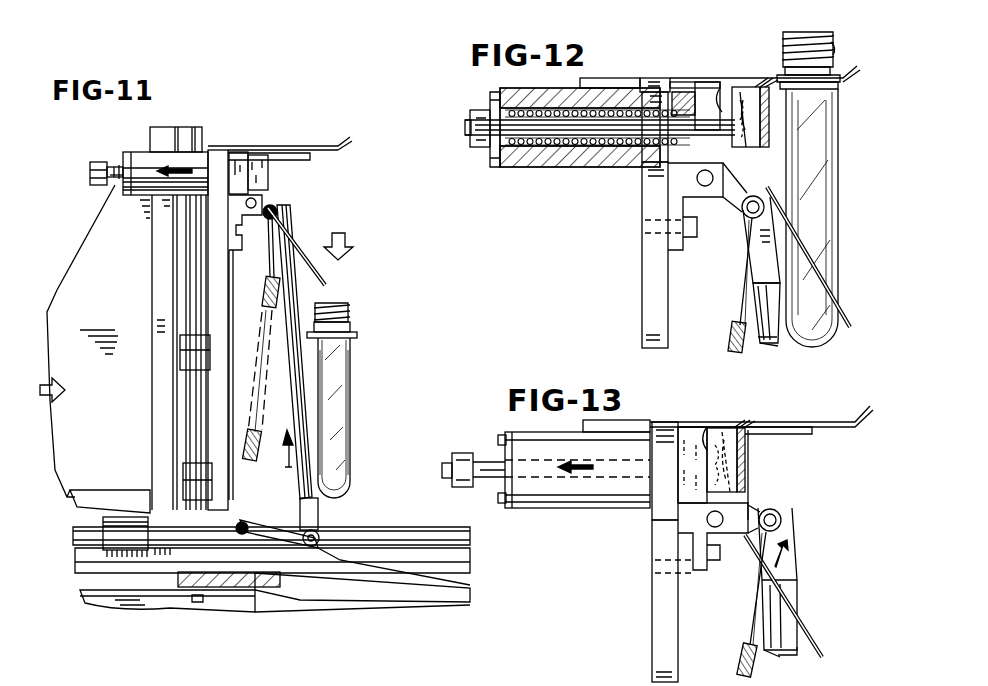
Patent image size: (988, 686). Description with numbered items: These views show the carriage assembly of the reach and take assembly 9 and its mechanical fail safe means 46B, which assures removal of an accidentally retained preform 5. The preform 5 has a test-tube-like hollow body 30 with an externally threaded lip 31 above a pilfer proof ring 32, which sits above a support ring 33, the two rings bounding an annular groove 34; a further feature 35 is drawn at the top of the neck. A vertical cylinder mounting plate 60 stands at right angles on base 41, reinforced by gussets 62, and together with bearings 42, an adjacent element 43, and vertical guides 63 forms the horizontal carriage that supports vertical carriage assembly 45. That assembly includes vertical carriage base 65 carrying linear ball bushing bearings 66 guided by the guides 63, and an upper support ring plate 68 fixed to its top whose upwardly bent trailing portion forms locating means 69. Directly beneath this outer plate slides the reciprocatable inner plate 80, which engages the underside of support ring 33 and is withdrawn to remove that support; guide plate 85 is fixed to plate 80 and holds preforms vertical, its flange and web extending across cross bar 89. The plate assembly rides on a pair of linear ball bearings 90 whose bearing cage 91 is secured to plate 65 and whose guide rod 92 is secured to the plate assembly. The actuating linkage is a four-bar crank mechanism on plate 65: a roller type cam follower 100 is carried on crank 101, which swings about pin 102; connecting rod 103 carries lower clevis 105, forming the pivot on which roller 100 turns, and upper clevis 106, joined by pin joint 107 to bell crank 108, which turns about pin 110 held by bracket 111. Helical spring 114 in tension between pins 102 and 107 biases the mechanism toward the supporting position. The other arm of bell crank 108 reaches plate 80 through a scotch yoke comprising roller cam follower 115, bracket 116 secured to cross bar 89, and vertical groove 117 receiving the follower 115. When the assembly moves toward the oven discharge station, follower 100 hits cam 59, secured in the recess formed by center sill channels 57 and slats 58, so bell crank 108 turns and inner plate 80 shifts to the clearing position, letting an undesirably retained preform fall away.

In FIG. 11, the preform 5 is at (354, 394).
In FIG. 12, the preform 5 is at (842, 158).
In FIG. 11, the reach and take assembly 9 is at (63, 275).
In FIG. 11, the hollow body 30 is at (352, 416).
In FIG. 12, the hollow body 30 is at (842, 208).
In FIG. 12, the externally threaded lip 31 is at (812, 40).
In FIG. 12, the pilfer proof ring 32 is at (836, 52).
In FIG. 11, the support ring 33 is at (356, 340).
In FIG. 12, the support ring 33 is at (840, 90).
In FIG. 11, the annular groove 34 is at (352, 328).
In FIG. 12, the annular groove 34 is at (841, 75).
In FIG. 11, the cap threads 35 is at (356, 313).
In FIG. 12, the cap threads 35 is at (835, 38).
In FIG. 11, the base 41 is at (86, 500).
In FIG. 11, the bearings 42 is at (405, 527).
In FIG. 11, the slide block 43 is at (110, 532).
In FIG. 11, the vertical carriage assembly 45 is at (222, 146).
In FIG. 12, the vertical carriage assembly 45 is at (652, 78).
In FIG. 13, the vertical carriage assembly 45 is at (667, 420).
In FIG. 11, the mechanical fail safe means 46B is at (302, 300).
In FIG. 12, the mechanical fail safe means 46B is at (782, 350).
In FIG. 13, the mechanical fail safe means 46B is at (800, 586).
In FIG. 11, the center sill channels 57 is at (143, 612).
In FIG. 11, the slats 58 is at (190, 588).
In FIG. 11, the cam 59 is at (380, 583).
In FIG. 11, the vertical cylinder mounting plate 60 is at (158, 289).
In FIG. 11, the gussets 62 is at (65, 350).
In FIG. 11, the vertical guides 63 is at (190, 400).
In FIG. 11, the vertical carriage base 65 is at (222, 323).
In FIG. 12, the vertical carriage base 65 is at (650, 302).
In FIG. 13, the vertical carriage base 65 is at (660, 604).
In FIG. 11, the linear ball bushing bearings 66 is at (183, 360).
In FIG. 11, the upper support ring plate 68 is at (258, 148).
In FIG. 12, the upper support ring plate 68 is at (678, 82).
In FIG. 13, the upper support ring plate 68 is at (692, 427).
In FIG. 11, the locating means 69 is at (340, 142).
In FIG. 12, the locating means 69 is at (858, 76).
In FIG. 13, the locating means 69 is at (860, 426).
In FIG. 11, the inner plate 80 is at (310, 153).
In FIG. 13, the inner plate 80 is at (806, 434).
In FIG. 11, the guide plate 85 is at (328, 282).
In FIG. 12, the guide plate 85 is at (850, 320).
In FIG. 13, the guide plate 85 is at (822, 645).
In FIG. 11, the cross bar 89 is at (268, 178).
In FIG. 12, the cross bar 89 is at (769, 130).
In FIG. 13, the cross bar 89 is at (748, 465).
In FIG. 11, the linear ball bearings 90 is at (118, 153).
In FIG. 12, the linear ball bearings 90 is at (487, 100).
In FIG. 13, the linear ball bearings 90 is at (500, 434).
In FIG. 11, the bearing cage 91 is at (143, 155).
In FIG. 12, the bearing cage 91 is at (515, 168).
In FIG. 13, the bearing cage 91 is at (538, 506).
In FIG. 11, the guide rod 92 is at (117, 182).
In FIG. 12, the guide rod 92 is at (568, 132).
In FIG. 13, the guide rod 92 is at (580, 485).
In FIG. 11, the roller type cam follower 100 is at (328, 555).
In FIG. 11, the crank 101 is at (283, 545).
In FIG. 11, the pin or axle 102 is at (250, 548).
In FIG. 11, the connecting rod 103 is at (318, 455).
In FIG. 12, the connecting rod 103 is at (770, 345).
In FIG. 13, the connecting rod 103 is at (780, 628).
In FIG. 11, the lower clevis 105 is at (318, 514).
In FIG. 11, the upper clevis 106 is at (285, 218).
In FIG. 12, the upper clevis 106 is at (762, 268).
In FIG. 13, the upper clevis 106 is at (793, 565).
In FIG. 12, the pin joint 107 is at (752, 246).
In FIG. 13, the pin joint 107 is at (781, 520).
In FIG. 12, the bell crank 108 is at (745, 216).
In FIG. 13, the bell crank 108 is at (760, 508).
In FIG. 12, the pin 110 is at (697, 178).
In FIG. 13, the pin 110 is at (705, 521).
In FIG. 11, the bracket 111 is at (237, 248).
In FIG. 12, the bracket 111 is at (668, 202).
In FIG. 13, the bracket 111 is at (682, 553).
In FIG. 11, the helical spring 114 is at (250, 440).
In FIG. 12, the helical spring 114 is at (735, 325).
In FIG. 13, the helical spring 114 is at (742, 658).
In FIG. 12, the roller cam follower 115 is at (758, 88).
In FIG. 13, the roller cam follower 115 is at (732, 430).
In FIG. 12, the bracket 116 is at (720, 88).
In FIG. 13, the bracket 116 is at (708, 427).
In FIG. 12, the vertical groove 117 is at (765, 78).
In FIG. 13, the vertical groove 117 is at (750, 428).